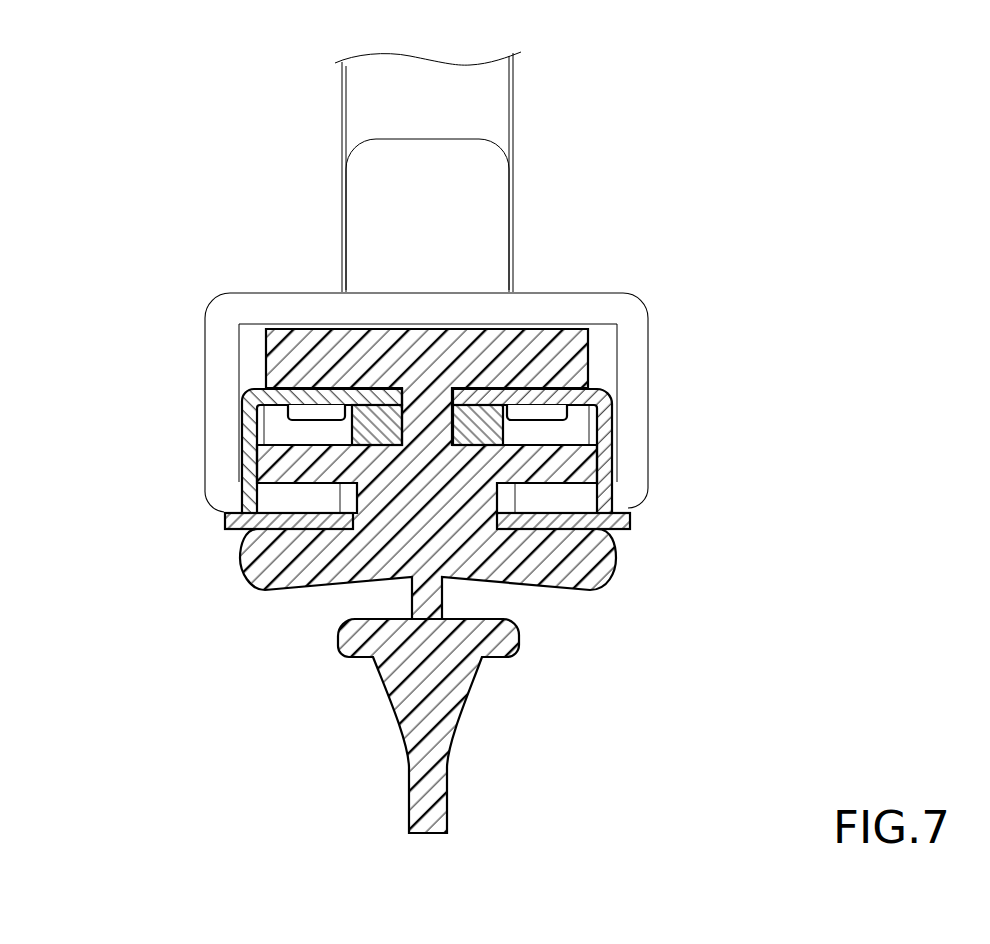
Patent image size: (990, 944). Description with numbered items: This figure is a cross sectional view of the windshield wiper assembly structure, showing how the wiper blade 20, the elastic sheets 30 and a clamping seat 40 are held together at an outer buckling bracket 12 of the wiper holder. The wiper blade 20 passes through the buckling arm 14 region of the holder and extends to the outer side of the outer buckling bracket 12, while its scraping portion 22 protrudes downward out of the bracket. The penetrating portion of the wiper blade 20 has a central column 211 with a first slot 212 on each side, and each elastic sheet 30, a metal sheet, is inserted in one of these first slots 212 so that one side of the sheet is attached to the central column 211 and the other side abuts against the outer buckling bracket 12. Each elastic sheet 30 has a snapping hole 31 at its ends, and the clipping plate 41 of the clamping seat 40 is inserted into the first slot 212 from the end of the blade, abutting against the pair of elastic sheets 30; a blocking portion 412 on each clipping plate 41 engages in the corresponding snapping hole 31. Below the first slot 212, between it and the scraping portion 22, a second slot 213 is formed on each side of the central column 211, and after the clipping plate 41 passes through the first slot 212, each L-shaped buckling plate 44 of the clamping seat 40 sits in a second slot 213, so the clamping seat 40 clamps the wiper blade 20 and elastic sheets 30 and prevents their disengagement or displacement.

The outer buckling bracket 12 is at (639, 360).
The buckling arm 14 is at (492, 97).
The wiper blade 20 is at (502, 726).
The scraping portion 22 is at (452, 680).
The elastic sheet 30 is at (375, 420).
The snapping hole 31 is at (474, 382).
The clamping seat 40 is at (632, 504).
The clipping plate 41 is at (553, 398).
The buckling plate 44 is at (222, 520).
The central column 211 is at (425, 420).
The first slot 212 is at (300, 441).
The second slot 213 is at (355, 498).
The blocking portion 412 is at (557, 413).